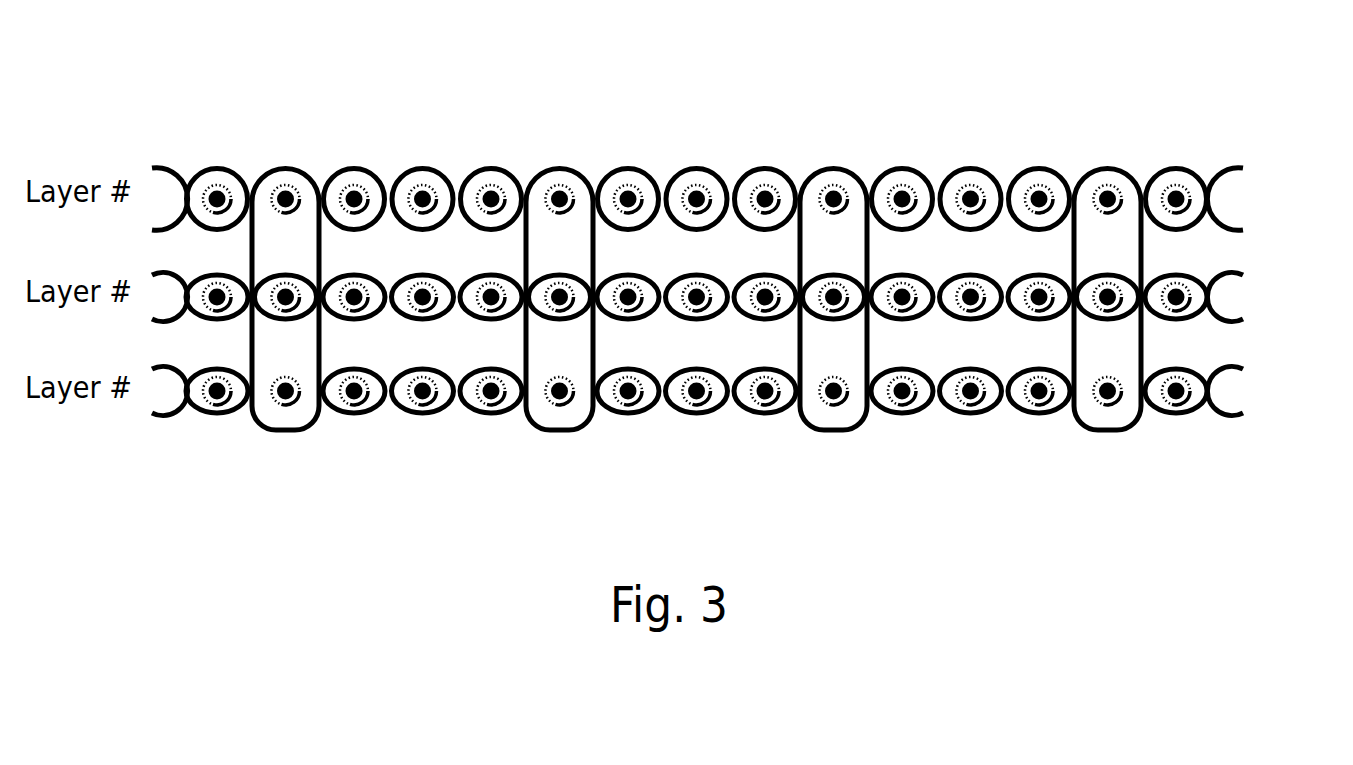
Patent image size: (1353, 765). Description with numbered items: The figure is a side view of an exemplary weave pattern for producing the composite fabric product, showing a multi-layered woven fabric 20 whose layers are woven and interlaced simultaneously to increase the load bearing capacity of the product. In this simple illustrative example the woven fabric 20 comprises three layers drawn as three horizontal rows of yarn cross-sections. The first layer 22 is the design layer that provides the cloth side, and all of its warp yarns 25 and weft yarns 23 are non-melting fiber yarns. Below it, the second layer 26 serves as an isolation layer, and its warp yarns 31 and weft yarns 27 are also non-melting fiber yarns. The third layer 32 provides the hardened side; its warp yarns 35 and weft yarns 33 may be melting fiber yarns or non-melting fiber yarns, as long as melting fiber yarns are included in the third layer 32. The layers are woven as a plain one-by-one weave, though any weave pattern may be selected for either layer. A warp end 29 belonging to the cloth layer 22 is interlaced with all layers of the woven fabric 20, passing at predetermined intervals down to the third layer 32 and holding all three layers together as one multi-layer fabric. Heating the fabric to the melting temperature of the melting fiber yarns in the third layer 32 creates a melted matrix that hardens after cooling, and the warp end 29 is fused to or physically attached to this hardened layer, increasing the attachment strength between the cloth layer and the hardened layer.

The multi-layered woven fabric 20 is at (840, 155).
The first layer 22 is at (1230, 210).
The weft yarns 23 is at (494, 188).
The warp yarns 25 is at (419, 168).
The second layer 26 is at (1230, 312).
The weft yarns 27 is at (282, 307).
The warp end 29 is at (327, 270).
The warp yarns 31 is at (281, 271).
The third layer 32 is at (1230, 398).
The weft yarns 33 is at (898, 402).
The warp yarns 35 is at (968, 413).